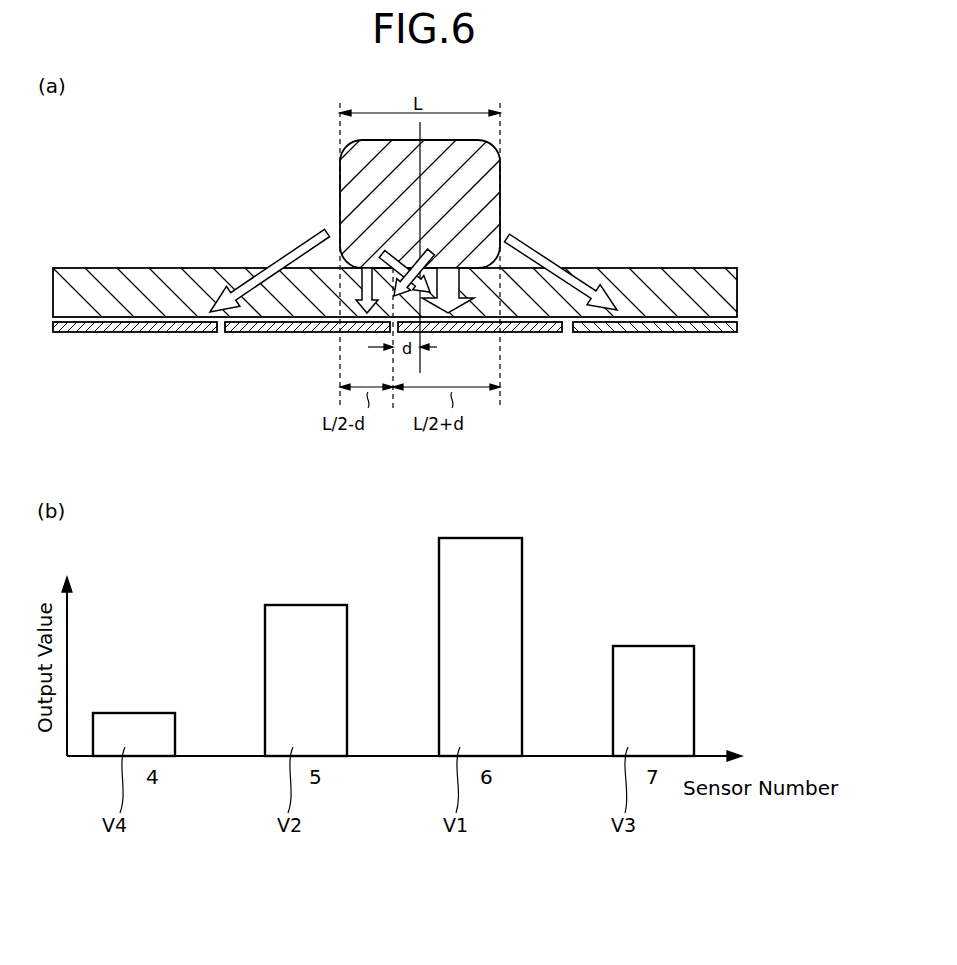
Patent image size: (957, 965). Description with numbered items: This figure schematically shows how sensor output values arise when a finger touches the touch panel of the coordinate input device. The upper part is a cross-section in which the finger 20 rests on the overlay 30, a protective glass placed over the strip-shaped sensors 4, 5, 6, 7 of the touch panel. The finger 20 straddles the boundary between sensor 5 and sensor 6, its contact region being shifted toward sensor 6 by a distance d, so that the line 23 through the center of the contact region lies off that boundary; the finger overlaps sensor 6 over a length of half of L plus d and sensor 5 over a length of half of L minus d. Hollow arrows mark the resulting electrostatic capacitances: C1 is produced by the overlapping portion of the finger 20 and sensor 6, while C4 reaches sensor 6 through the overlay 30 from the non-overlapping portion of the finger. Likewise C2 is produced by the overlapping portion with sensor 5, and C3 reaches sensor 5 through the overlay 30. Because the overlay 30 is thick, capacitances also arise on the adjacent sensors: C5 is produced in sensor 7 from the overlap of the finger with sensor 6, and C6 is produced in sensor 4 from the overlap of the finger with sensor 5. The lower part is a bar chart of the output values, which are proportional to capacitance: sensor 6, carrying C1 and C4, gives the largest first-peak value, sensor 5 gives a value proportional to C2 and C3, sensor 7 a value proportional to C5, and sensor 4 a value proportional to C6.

The finger 20 is at (493, 180).
The line passing through the center of the contact region 23 is at (418, 170).
The overlay 30 is at (676, 277).
The sensor 4 is at (153, 333).
The sensor 5 is at (285, 333).
The sensor 6 is at (545, 333).
The sensor 7 is at (660, 333).
The electrostatic capacitance C1 is at (448, 272).
The electrostatic capacitance C2 is at (367, 266).
The electrostatic capacitance C3 is at (432, 251).
The electrostatic capacitance C4 is at (384, 254).
The electrostatic capacitance C5 is at (549, 262).
The electrostatic capacitance C6 is at (290, 250).